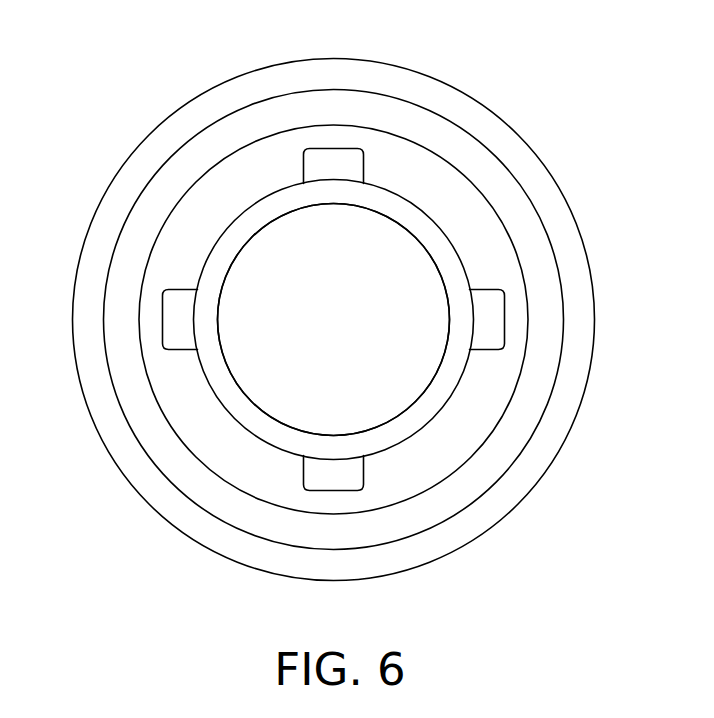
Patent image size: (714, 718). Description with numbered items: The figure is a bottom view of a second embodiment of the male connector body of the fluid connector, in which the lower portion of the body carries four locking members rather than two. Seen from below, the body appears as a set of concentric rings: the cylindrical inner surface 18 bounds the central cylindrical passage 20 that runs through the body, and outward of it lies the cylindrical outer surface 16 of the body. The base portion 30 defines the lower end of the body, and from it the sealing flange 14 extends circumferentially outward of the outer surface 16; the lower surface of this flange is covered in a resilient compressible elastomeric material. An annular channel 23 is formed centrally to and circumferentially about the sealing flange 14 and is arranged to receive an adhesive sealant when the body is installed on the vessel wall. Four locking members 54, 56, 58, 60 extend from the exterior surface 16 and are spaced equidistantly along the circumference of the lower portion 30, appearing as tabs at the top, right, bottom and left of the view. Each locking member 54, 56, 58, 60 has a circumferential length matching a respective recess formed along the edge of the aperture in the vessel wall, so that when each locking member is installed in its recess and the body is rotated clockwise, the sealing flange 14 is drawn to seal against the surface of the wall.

The sealing flange 14 is at (490, 108).
The cylindrical outer surface 16 is at (428, 427).
The cylindrical inner surface 18 is at (432, 381).
The cylindrical passage 20 is at (272, 372).
The annular channel 23 is at (496, 185).
The base portion 30 is at (220, 203).
The locking member 54 is at (325, 468).
The locking member 56 is at (331, 168).
The locking member 58 is at (180, 324).
The locking member 60 is at (490, 316).